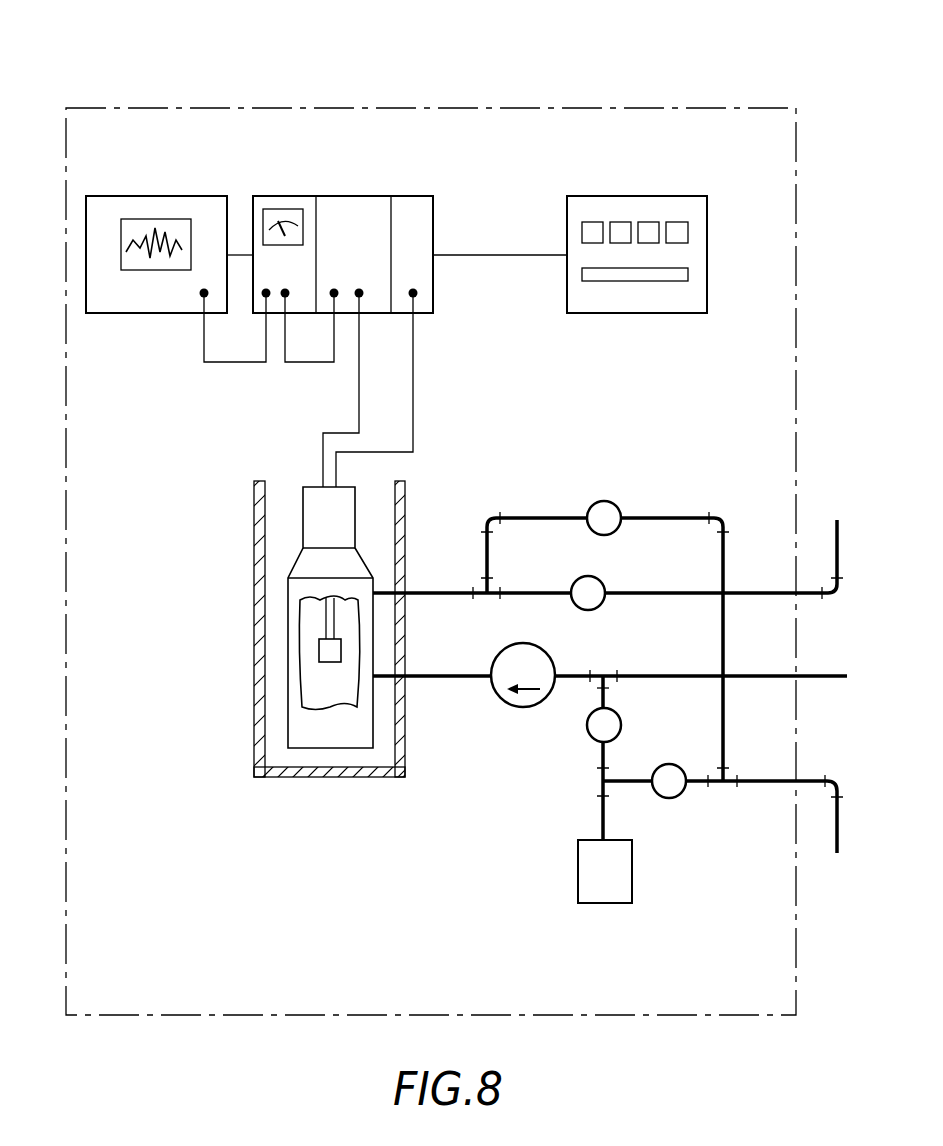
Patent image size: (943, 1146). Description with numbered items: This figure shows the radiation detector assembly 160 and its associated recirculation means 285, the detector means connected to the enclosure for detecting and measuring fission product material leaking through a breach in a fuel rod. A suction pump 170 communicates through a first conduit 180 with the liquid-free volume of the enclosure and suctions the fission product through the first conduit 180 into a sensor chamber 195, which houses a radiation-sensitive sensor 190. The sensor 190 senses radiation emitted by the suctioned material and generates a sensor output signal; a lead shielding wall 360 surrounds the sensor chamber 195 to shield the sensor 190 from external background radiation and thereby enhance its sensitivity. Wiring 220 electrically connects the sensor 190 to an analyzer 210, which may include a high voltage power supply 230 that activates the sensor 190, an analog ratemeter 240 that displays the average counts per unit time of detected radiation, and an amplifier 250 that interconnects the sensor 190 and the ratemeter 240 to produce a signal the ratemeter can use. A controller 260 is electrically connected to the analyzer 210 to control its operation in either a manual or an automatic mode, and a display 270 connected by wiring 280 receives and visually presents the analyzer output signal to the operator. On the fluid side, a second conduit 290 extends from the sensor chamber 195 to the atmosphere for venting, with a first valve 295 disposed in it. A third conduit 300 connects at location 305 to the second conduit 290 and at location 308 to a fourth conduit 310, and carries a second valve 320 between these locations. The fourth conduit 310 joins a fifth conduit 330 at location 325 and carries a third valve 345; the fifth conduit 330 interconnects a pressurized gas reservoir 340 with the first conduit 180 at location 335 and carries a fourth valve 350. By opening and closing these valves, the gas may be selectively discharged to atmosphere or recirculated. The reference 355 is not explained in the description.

The radiation detector assembly 160 is at (760, 88).
The analyzer 210 is at (366, 90).
The suction pump 170 is at (514, 643).
The first conduit 180 is at (440, 683).
The radiation-sensitive sensor 190 is at (326, 655).
The sensor chamber 195 is at (322, 688).
The wiring 220 is at (359, 425).
The high voltage power supply 230 is at (425, 226).
The analog ratemeter 240 is at (264, 200).
The amplifier 250 is at (342, 202).
The controller 260 is at (660, 196).
The display 270 is at (110, 318).
The wiring 280 is at (222, 365).
The recirculation means 285 is at (808, 778).
The second conduit 290 is at (383, 586).
The first valve 295 is at (601, 577).
The third conduit 300 is at (548, 515).
The location 305 is at (487, 598).
The location 308 is at (728, 773).
The fourth conduit 310 is at (694, 784).
The second valve 320 is at (610, 500).
The location 325 is at (598, 786).
The fifth conduit 330 is at (578, 880).
The location 335 is at (605, 670).
The pressurized gas reservoir 340 is at (575, 895).
The third valve 345 is at (657, 799).
The fourth valve 350 is at (588, 731).
The enclosure 355 is at (431, 561).
The lead shielding wall 360 is at (290, 778).